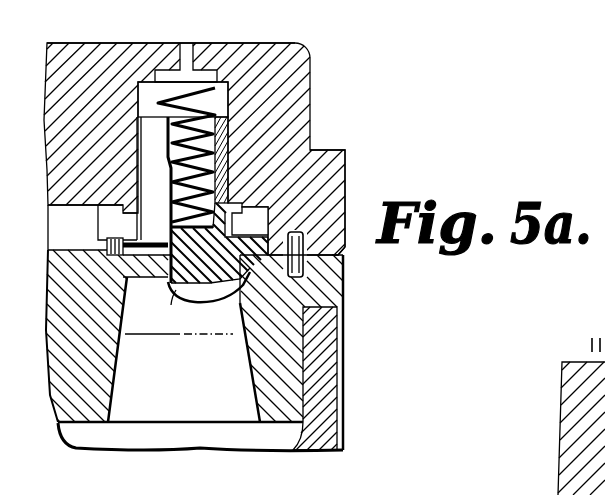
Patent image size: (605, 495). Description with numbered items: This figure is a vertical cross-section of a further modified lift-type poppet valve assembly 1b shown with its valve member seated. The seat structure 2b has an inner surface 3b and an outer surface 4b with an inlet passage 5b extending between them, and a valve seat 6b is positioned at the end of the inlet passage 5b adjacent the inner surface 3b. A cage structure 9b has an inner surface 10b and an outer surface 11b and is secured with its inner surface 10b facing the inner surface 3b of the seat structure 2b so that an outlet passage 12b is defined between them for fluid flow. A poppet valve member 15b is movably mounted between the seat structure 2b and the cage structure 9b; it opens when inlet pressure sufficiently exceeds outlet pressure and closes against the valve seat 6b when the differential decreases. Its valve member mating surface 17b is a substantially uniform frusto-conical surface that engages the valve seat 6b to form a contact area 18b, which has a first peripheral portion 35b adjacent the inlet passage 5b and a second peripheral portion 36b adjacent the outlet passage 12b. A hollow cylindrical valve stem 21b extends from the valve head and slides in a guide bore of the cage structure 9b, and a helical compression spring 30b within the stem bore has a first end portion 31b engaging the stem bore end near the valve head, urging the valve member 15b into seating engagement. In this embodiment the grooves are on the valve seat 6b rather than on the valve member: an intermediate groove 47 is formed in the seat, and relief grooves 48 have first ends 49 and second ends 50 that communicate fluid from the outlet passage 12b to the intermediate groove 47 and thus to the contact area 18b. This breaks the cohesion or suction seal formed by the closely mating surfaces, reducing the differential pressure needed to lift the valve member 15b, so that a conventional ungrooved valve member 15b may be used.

The poppet valve assembly 1b is at (326, 87).
The seat structure 2b is at (342, 350).
The inner surface of seat structure 3b is at (345, 250).
The outer surface of seat structure 4b is at (97, 425).
The inlet passage 5b is at (251, 398).
The valve seat 6b is at (174, 298).
The cage structure 9b is at (346, 153).
The inner surface of cage structure 10b is at (48, 205).
The outer surface of cage structure 11b is at (99, 42).
The outlet passage 12b is at (48, 250).
The poppet valve member 15b is at (230, 127).
The valve member mating surface 17b is at (125, 311).
The contact area 18b is at (200, 294).
The valve stem 21b is at (230, 164).
The helical compression spring 30b is at (208, 113).
The first end portion of spring 31b is at (167, 232).
The first peripheral portion of contact area 35b is at (173, 298).
The second peripheral portion of contact area 36b is at (100, 205).
The intermediate groove 47 is at (130, 266).
The relief grooves 48 is at (106, 278).
The first ends of relief grooves 49 is at (98, 255).
The second ends of relief grooves 50 is at (140, 232).